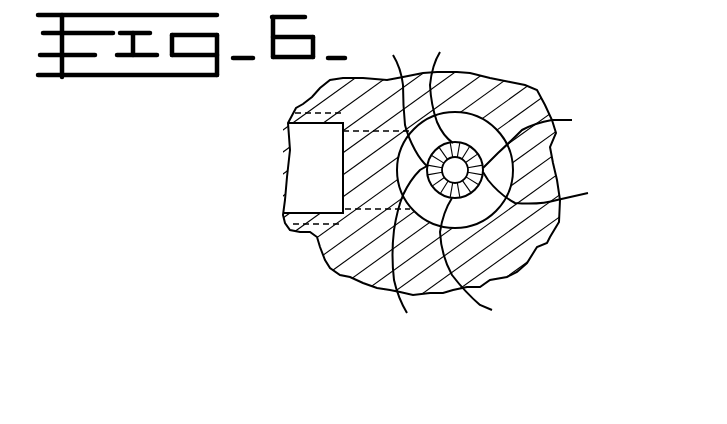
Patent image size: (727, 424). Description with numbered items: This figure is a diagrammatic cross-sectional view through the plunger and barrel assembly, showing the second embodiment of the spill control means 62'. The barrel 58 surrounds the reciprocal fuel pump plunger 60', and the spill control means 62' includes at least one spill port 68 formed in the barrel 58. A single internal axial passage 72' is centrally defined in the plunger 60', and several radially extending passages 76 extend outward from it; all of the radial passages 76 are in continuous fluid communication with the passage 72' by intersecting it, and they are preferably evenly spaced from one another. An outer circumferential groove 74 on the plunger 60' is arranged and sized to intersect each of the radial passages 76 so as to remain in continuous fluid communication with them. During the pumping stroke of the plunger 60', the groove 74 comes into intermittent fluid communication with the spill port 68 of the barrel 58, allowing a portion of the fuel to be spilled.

The barrel 58 is at (548, 243).
The plunger 60' is at (553, 190).
The spill control means 62' is at (304, 168).
The spill port 68 is at (388, 205).
The internal axial passage 72' is at (417, 251).
The outer circumferential groove 74 is at (482, 130).
The radially extending passages 76 is at (481, 178).